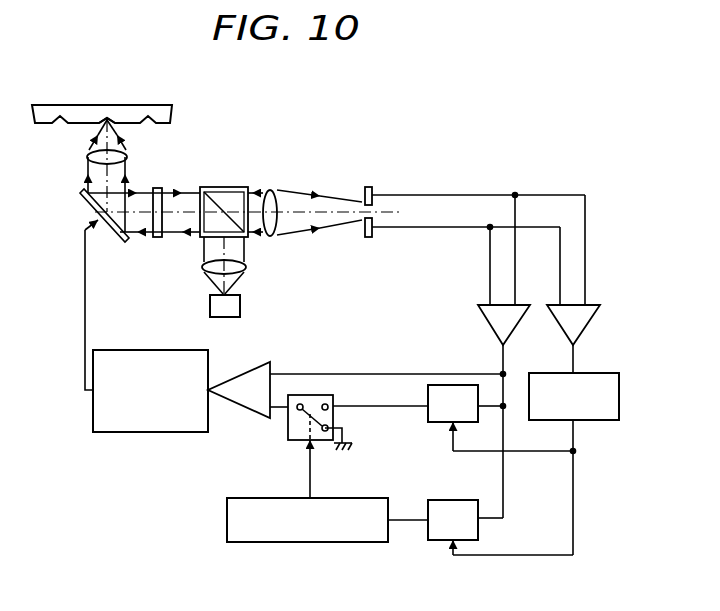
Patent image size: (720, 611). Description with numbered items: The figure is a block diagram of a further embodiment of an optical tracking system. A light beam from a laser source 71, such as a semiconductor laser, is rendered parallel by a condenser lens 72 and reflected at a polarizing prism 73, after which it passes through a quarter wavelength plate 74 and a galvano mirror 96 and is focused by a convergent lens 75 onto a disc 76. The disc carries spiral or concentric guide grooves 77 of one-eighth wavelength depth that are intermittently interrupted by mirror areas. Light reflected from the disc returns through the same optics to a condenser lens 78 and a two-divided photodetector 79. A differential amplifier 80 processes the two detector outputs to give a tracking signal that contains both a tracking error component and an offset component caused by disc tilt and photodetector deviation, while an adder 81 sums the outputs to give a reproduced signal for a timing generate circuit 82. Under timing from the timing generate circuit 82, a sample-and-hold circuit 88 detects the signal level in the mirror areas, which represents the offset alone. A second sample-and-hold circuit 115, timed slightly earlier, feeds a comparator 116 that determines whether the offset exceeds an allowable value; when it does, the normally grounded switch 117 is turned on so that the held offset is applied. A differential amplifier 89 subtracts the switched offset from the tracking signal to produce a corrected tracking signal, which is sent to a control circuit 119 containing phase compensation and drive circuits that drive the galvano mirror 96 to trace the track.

The laser source 71 is at (225, 317).
The condenser lens 72 is at (246, 267).
The polarizing prism 73 is at (224, 187).
The 1/4 wavelength plate 74 is at (157, 188).
The convergent lens 75 is at (89, 158).
The disc 76 is at (172, 106).
The guide grooves 77 is at (106, 105).
The condenser lens 78 is at (272, 190).
The photodetector 79 is at (368, 187).
The differential amplifier 80 is at (488, 313).
The adder 81 is at (588, 320).
The timing generate circuit 82 is at (600, 420).
The sample-and-hold circuit 88 is at (438, 422).
The differential amplifier 89 is at (248, 410).
The galvano mirror 96 is at (82, 199).
The sample-and-hold circuit 115 is at (432, 540).
The comparator 116 is at (307, 542).
The switch 117 is at (288, 440).
The control circuit 119 is at (152, 432).